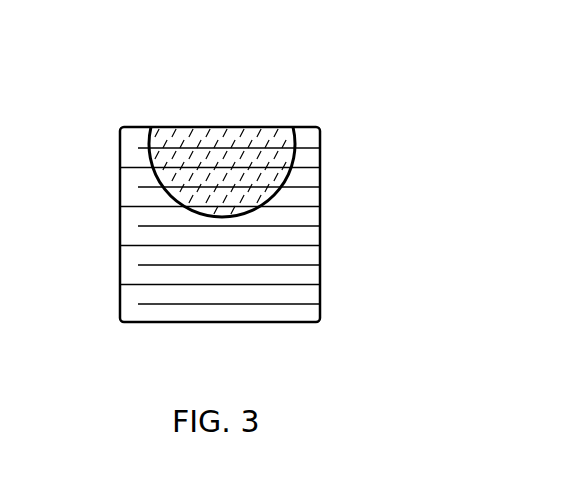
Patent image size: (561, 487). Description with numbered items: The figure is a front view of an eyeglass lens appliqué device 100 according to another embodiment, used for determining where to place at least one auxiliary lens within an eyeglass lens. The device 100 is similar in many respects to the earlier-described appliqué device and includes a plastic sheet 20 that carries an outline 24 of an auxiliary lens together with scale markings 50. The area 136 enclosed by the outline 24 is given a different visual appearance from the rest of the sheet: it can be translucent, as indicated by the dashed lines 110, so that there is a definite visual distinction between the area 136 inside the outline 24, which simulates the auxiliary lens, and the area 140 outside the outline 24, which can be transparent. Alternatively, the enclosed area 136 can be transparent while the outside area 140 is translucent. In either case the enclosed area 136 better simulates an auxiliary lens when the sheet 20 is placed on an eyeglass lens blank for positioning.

The eyeglass lens appliqué device 100 is at (137, 72).
The dashed lines 110 is at (180, 137).
The area enclosed by the outline 136 is at (257, 166).
The outline of an auxiliary lens 24 is at (293, 157).
The plastic sheet 20 is at (322, 217).
The area outside the outline 140 is at (266, 253).
The scale markings 50 is at (105, 122).